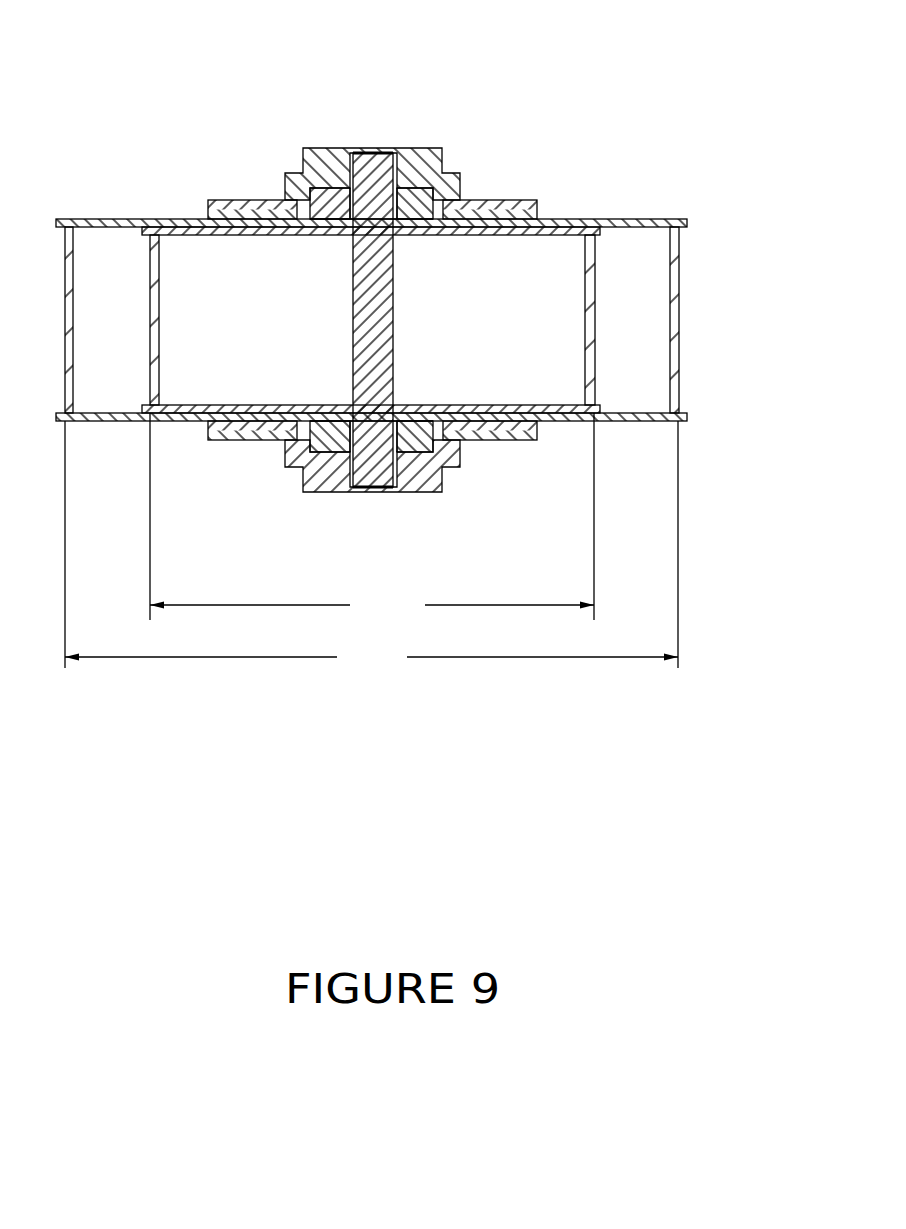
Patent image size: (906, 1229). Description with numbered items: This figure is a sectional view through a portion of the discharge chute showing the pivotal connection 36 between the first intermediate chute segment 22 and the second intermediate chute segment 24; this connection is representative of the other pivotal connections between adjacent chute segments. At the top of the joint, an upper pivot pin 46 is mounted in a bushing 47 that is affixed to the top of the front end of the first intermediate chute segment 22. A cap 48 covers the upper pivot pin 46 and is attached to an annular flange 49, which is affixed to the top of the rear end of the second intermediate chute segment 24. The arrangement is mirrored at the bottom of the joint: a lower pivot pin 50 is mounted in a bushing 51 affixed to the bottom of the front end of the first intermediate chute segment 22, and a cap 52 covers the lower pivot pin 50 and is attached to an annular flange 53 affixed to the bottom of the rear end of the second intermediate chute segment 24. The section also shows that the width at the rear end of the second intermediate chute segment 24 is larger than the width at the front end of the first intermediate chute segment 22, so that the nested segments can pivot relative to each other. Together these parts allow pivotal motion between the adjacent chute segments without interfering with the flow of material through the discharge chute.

The first intermediate chute segment 22 is at (160, 345).
The second intermediate chute segment 24 is at (682, 310).
The pivotal connection 36 is at (462, 97).
The upper pivot pin 46 is at (373, 213).
The bushing 47 is at (335, 213).
The cap 48 is at (442, 157).
The annular flange 49 is at (527, 197).
The lower pivot pin 50 is at (368, 425).
The bushing 51 is at (419, 427).
The cap 52 is at (320, 495).
The annular flange 53 is at (250, 443).